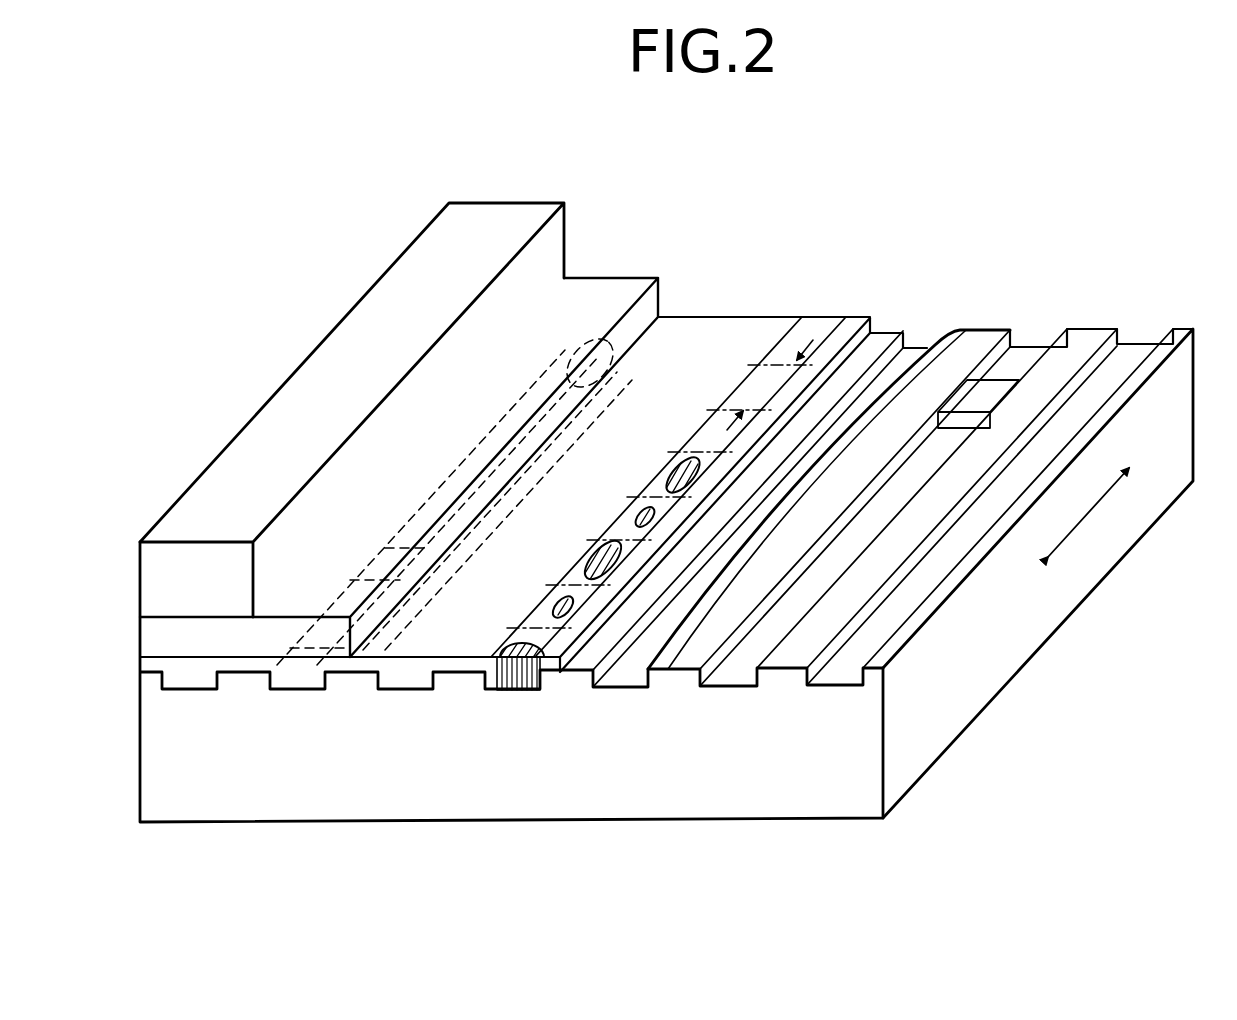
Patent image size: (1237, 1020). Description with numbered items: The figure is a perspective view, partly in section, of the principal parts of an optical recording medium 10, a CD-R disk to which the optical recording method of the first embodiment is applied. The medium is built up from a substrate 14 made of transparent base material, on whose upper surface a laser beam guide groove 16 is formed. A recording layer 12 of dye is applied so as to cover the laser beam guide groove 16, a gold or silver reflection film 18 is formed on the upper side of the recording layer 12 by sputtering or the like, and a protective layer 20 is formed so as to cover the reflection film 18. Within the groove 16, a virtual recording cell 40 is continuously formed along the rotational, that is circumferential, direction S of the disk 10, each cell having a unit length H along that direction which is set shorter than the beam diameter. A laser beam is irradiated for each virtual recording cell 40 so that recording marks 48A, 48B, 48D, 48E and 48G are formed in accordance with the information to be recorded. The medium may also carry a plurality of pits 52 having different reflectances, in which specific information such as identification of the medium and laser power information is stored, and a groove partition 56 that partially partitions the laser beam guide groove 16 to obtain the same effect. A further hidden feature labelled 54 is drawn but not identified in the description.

The optical recording medium 10 is at (288, 194).
The recording layer 12 is at (402, 689).
The substrate 14 is at (1022, 654).
The laser beam guide groove 16 is at (908, 346).
The reflection film 18 is at (660, 301).
The protective layer 20 is at (563, 241).
The virtual recording cell 40 is at (829, 315).
The recording mark 48A is at (554, 600).
The recording mark 48B is at (638, 509).
The recording mark 48D is at (669, 463).
The recording mark 48E is at (511, 644).
The recording mark 48G is at (593, 550).
The pits 52 is at (345, 614).
The buried waveguide branch 54 is at (538, 405).
The groove partition 56 is at (993, 393).
The unit length H is at (750, 397).
The circumferential direction S is at (1088, 512).